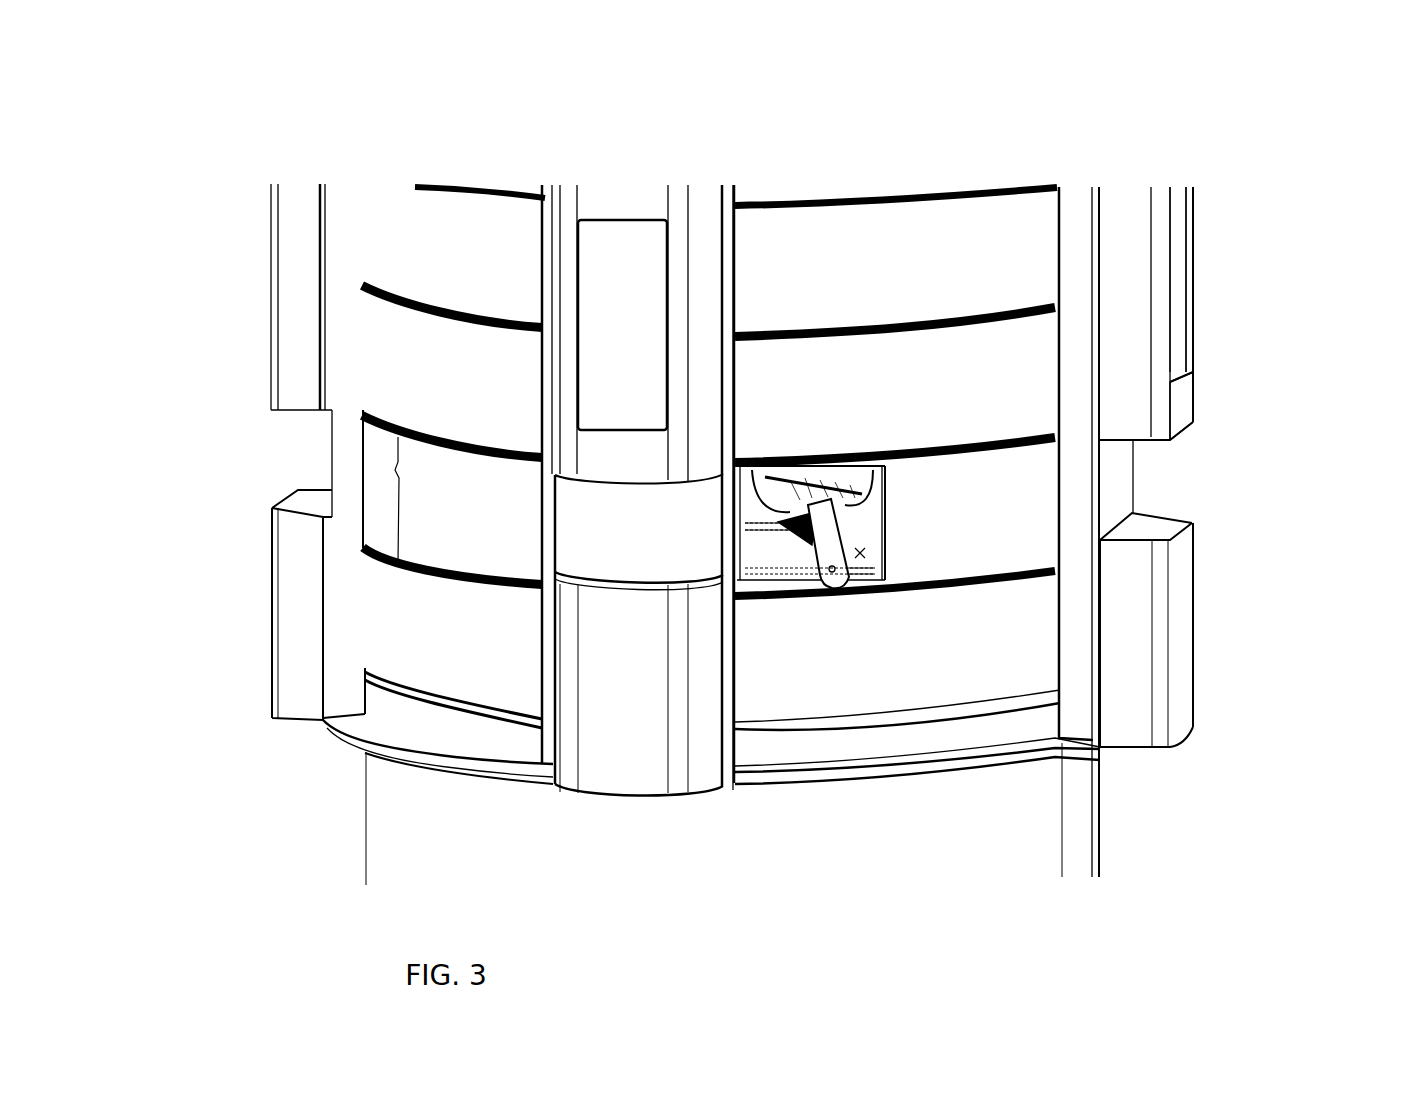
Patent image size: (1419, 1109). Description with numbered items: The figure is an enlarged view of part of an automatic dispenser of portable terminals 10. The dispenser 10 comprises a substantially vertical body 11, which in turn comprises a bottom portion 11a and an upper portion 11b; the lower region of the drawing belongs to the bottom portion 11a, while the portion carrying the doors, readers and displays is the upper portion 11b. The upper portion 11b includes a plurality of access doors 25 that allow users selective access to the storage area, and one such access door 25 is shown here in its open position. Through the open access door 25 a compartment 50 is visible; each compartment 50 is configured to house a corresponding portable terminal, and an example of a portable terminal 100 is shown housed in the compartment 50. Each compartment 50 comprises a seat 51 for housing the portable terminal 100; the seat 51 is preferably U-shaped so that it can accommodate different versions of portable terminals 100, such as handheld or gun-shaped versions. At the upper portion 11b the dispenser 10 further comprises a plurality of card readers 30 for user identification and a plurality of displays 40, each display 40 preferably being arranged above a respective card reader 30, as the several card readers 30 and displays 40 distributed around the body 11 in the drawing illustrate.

The automatic dispenser of portable terminals 10 is at (320, 128).
The vertical body 11 is at (1195, 230).
The bottom portion 11a is at (1016, 840).
The upper portion 11b is at (1212, 401).
The access door 25 is at (923, 546).
The card reader 30 is at (290, 467).
The display 40 is at (628, 347).
The compartment 50 is at (757, 545).
The seat 51 is at (868, 522).
The portable terminal 100 is at (817, 580).